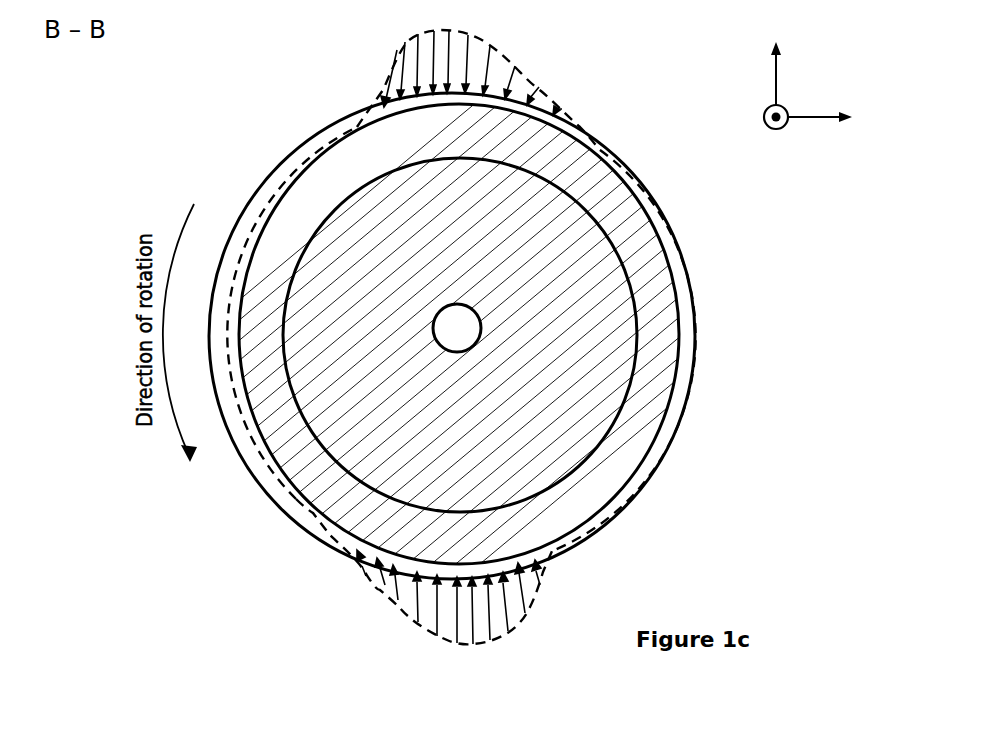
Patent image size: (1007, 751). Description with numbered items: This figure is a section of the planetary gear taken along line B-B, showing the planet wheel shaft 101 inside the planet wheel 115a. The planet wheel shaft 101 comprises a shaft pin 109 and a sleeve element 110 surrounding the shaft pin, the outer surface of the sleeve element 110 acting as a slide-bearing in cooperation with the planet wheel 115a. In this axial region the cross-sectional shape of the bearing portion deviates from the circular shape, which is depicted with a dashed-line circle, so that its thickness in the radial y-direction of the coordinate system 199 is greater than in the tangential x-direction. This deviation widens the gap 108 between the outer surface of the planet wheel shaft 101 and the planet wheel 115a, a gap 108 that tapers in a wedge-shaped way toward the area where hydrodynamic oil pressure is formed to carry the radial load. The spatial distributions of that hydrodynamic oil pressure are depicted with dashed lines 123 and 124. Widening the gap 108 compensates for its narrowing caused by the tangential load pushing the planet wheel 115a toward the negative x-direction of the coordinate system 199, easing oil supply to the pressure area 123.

The planet wheel shaft 101 is at (307, 324).
The gap 108 is at (640, 180).
The shaft pin 109 is at (415, 400).
The sleeve element 110 is at (358, 163).
The planet wheel 115a is at (290, 132).
The hydrodynamic oil pressure distribution 123 is at (522, 68).
The hydrodynamic oil pressure distribution 124 is at (392, 596).
The coordinate system 199 is at (837, 82).